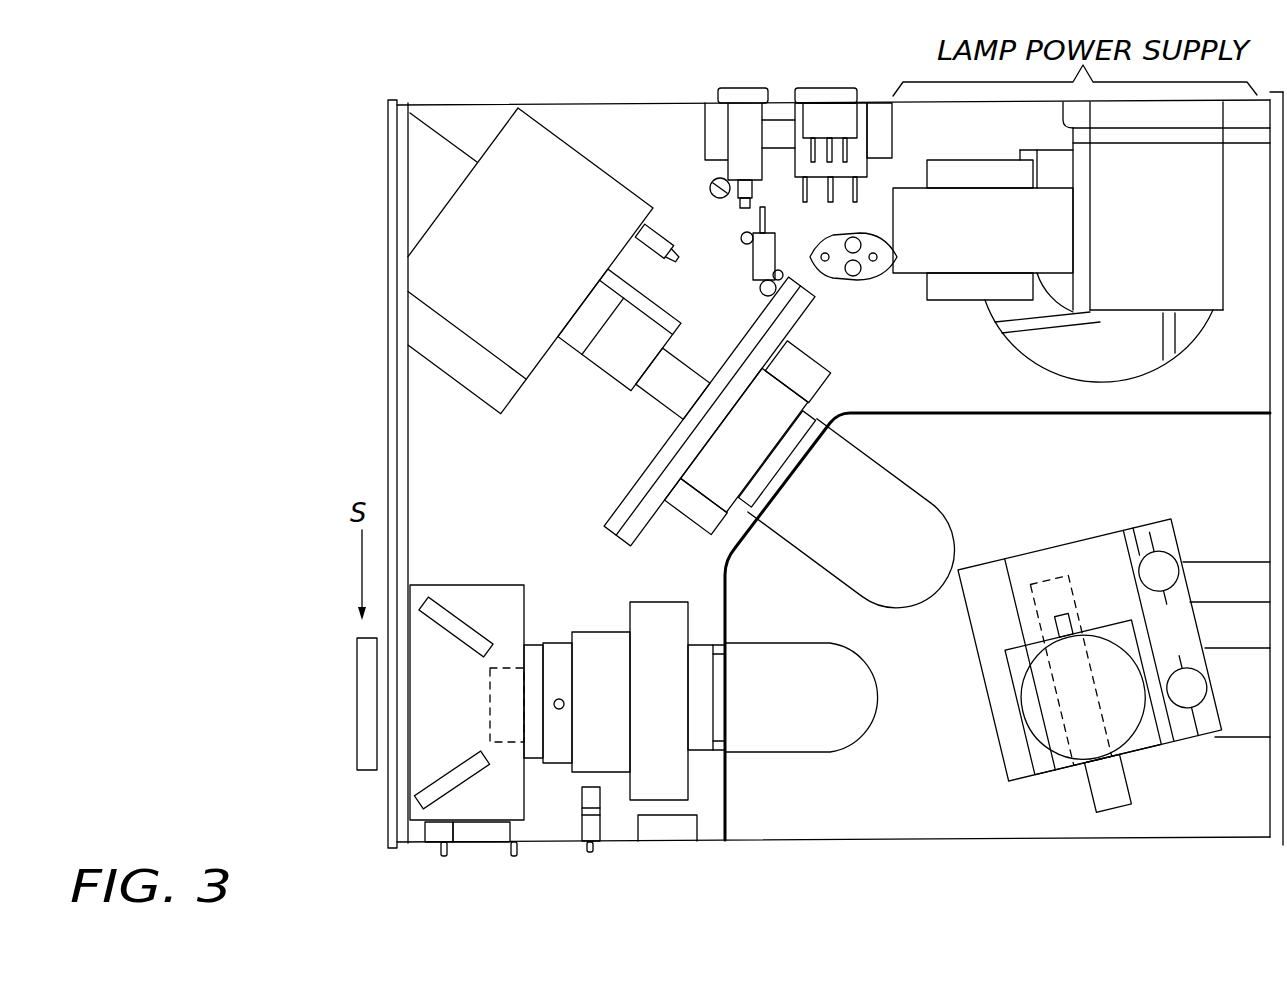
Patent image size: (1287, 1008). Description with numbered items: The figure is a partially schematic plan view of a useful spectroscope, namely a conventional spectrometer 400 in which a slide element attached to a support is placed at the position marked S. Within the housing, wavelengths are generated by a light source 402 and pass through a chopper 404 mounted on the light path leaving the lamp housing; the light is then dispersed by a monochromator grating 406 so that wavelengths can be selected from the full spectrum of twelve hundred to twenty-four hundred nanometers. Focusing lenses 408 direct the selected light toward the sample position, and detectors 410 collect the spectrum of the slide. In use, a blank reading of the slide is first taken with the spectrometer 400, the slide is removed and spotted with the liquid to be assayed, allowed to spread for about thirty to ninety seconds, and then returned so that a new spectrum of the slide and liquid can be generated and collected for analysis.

The spectrometer 400 is at (376, 322).
The light source 402 is at (535, 255).
The chopper 404 is at (630, 538).
The monochromator grating 406 is at (1040, 578).
The focusing lenses 408 is at (712, 802).
The detectors 410 is at (454, 606).